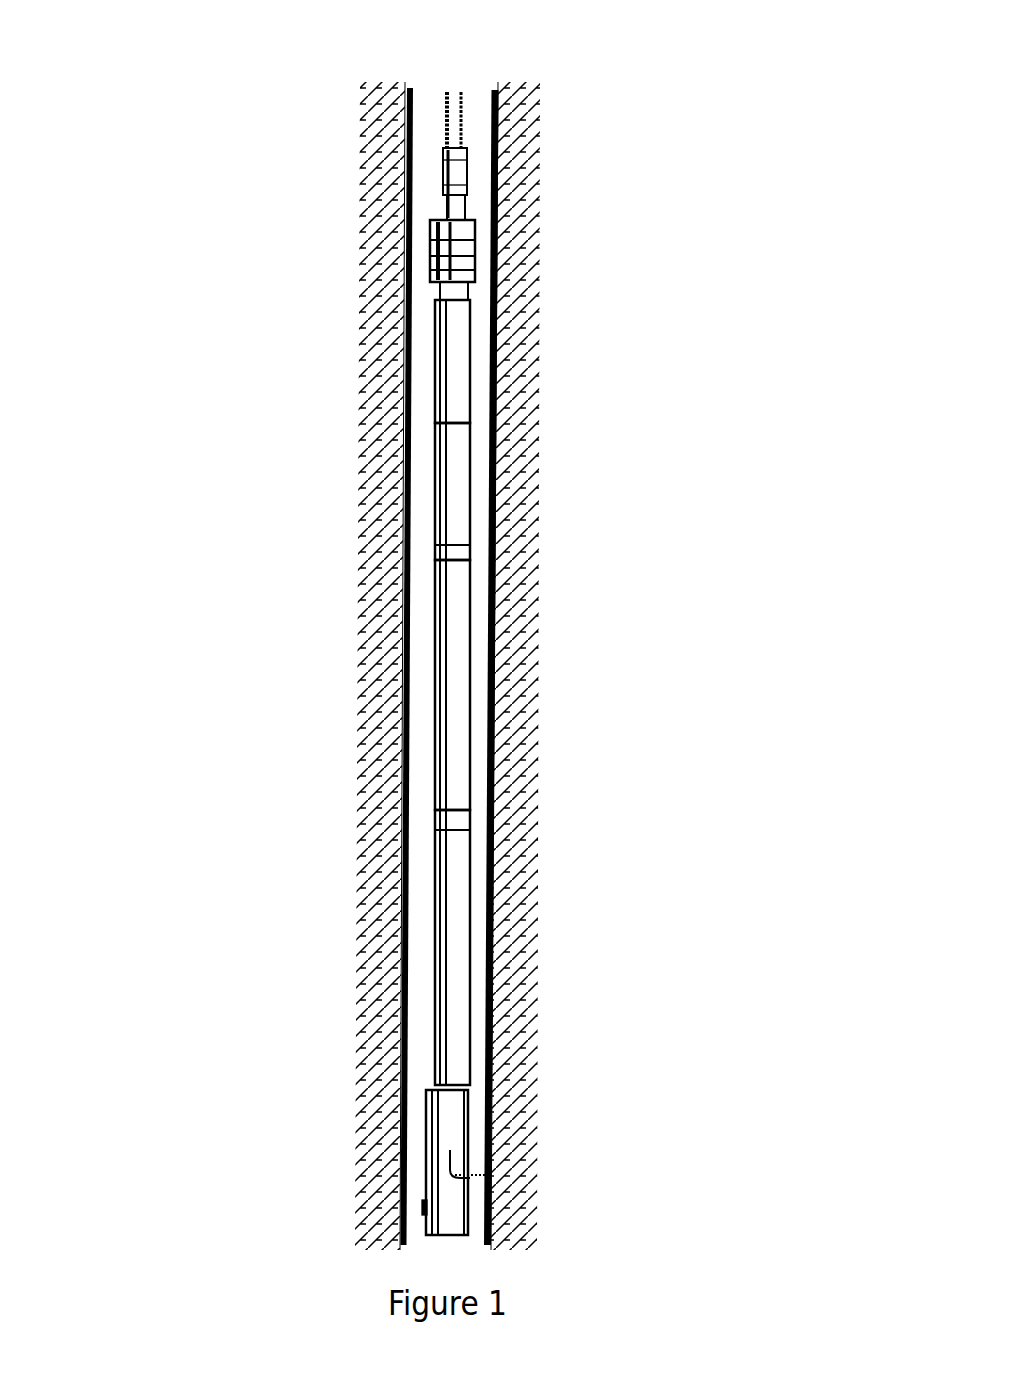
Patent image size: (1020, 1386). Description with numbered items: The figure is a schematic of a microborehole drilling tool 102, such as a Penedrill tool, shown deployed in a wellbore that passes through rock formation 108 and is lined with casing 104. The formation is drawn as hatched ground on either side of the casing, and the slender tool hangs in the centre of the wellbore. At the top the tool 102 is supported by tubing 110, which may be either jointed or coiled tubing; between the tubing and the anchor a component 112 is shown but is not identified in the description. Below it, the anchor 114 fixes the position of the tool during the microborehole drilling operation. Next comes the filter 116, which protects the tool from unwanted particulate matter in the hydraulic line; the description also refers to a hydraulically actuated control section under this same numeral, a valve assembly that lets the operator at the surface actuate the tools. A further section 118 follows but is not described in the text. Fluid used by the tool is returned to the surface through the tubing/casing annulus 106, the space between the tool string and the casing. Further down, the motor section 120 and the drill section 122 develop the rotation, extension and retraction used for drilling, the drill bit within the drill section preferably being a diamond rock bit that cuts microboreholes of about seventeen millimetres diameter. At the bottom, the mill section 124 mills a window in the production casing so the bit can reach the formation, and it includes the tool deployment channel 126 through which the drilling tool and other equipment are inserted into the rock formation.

The tool 102 is at (290, 648).
The casing 104 is at (403, 96).
The tubing/casing annulus 106 is at (418, 352).
The rock formation 108 is at (378, 455).
The tubing 110 is at (465, 123).
The cable head 112 is at (445, 180).
The anchor 114 is at (470, 256).
The filter 116 is at (465, 362).
The tool section 118 is at (465, 496).
The motor section 120 is at (465, 690).
The drill section 122 is at (465, 948).
The mill section 124 is at (427, 1143).
The tool deployment channel 126 is at (478, 1172).